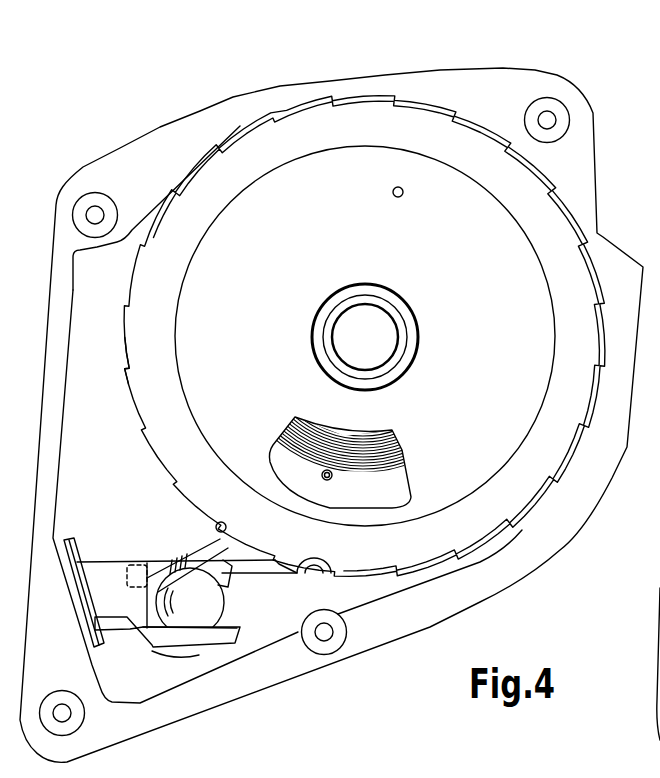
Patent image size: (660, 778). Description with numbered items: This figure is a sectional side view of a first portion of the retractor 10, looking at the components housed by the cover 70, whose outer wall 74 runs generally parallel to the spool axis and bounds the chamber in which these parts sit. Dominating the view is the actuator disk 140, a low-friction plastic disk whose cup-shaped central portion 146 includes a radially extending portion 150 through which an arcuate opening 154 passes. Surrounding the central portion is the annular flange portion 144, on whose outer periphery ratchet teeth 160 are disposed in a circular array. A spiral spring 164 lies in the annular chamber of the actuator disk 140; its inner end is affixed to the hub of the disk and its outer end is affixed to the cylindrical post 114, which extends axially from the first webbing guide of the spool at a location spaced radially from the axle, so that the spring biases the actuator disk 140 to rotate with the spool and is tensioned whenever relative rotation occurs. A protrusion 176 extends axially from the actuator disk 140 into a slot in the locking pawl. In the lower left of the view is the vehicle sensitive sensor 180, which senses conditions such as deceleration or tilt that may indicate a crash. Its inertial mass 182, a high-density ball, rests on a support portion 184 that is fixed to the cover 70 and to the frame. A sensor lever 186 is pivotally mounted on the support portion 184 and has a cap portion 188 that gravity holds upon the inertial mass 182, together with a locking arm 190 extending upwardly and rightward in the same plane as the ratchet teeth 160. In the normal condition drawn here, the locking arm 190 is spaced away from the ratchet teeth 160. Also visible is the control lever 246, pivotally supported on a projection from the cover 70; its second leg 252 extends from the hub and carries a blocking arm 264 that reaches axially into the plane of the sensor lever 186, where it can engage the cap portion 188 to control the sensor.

The retractor 10 is at (100, 94).
The cover 70 is at (168, 132).
The outer wall 74 is at (292, 660).
The cylindrical post 114 is at (320, 476).
The actuator disk 140 is at (358, 113).
The annular flange portion 144 is at (302, 124).
The cup-shaped central portion 146 is at (364, 301).
The radially extending portion 150 is at (493, 252).
The arcuate opening 154 is at (405, 478).
The ratchet teeth 160 is at (128, 378).
The spiral spring 164 is at (295, 432).
The protrusion 176 is at (391, 195).
The vehicle sensitive sensor 180 is at (158, 678).
The inertial mass 182 is at (193, 610).
The support portion 184 is at (190, 650).
The sensor lever 186 is at (153, 563).
The cap portion 188 is at (186, 566).
The locking arm 190 is at (221, 522).
The control lever 246 is at (338, 597).
The second leg 252 is at (245, 566).
The blocking arm 264 is at (229, 562).